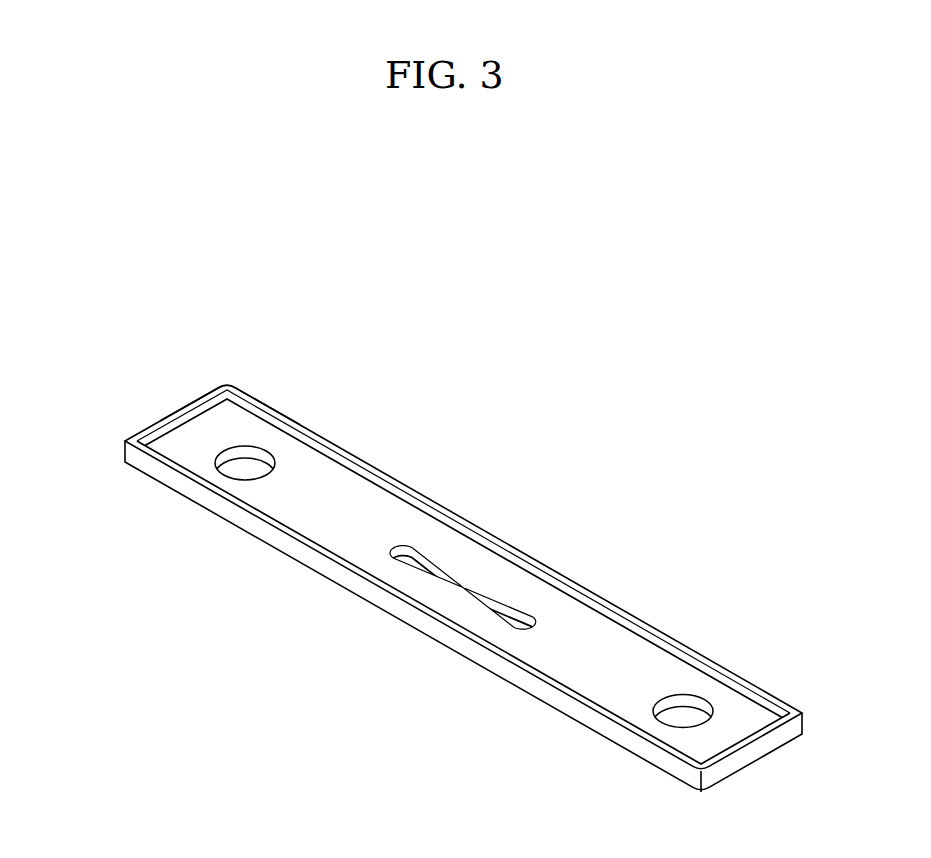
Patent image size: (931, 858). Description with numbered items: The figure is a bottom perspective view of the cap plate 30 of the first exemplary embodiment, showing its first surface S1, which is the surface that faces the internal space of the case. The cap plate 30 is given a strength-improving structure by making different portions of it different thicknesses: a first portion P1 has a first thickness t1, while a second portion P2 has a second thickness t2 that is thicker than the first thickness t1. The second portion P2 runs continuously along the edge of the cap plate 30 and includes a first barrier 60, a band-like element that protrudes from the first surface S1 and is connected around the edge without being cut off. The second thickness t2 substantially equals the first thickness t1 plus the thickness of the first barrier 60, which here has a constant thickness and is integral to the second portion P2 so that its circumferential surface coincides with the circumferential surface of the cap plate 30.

The cap plate 30 is at (498, 512).
The first barrier 60 is at (282, 420).
The first portion P1 is at (334, 505).
The second portion P2 is at (198, 400).
The first surface S1 is at (593, 646).
The first thickness t1 is at (482, 593).
The second thickness t2 is at (125, 441).